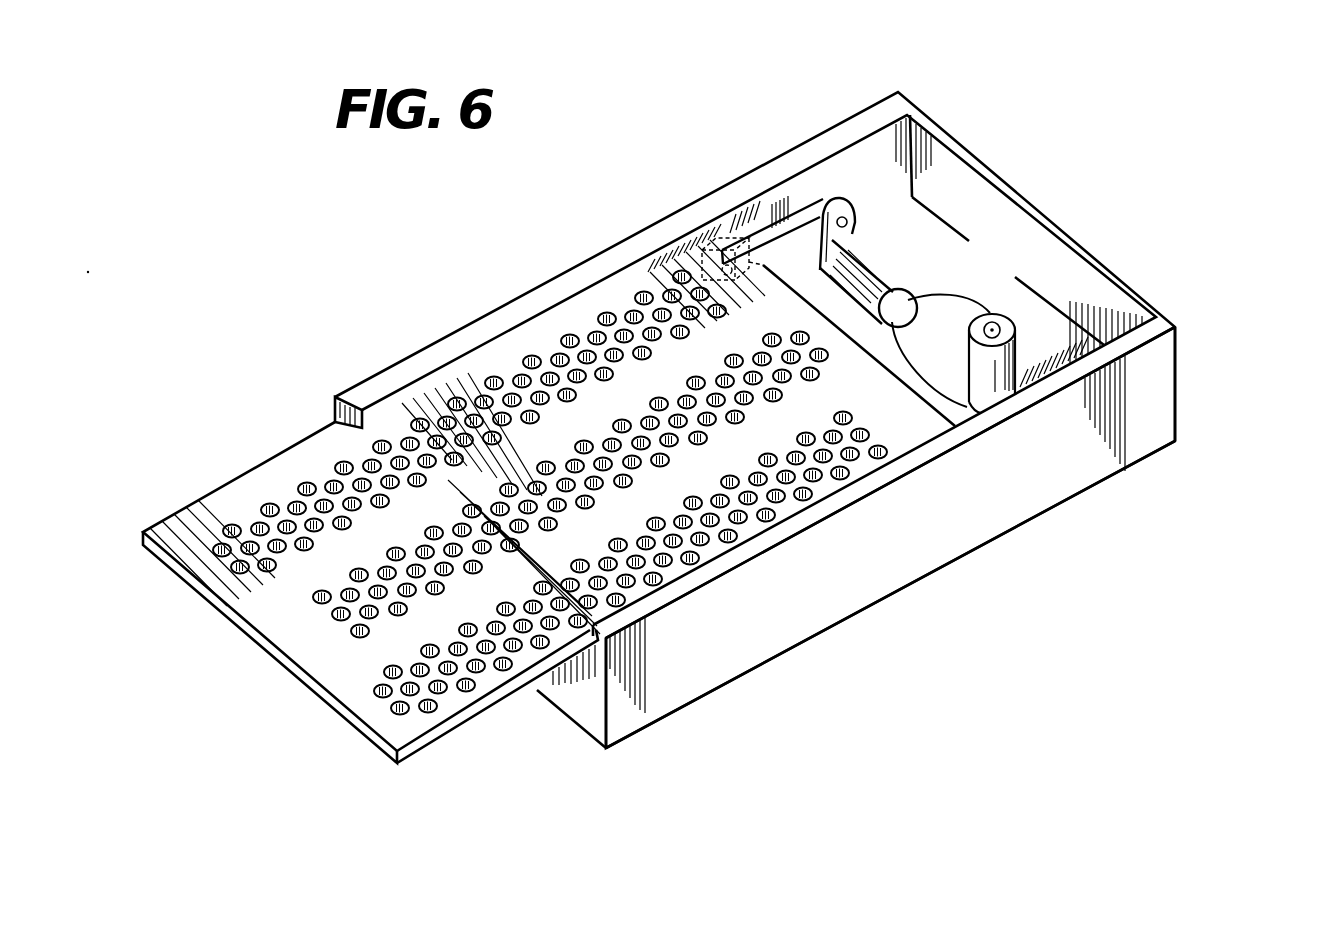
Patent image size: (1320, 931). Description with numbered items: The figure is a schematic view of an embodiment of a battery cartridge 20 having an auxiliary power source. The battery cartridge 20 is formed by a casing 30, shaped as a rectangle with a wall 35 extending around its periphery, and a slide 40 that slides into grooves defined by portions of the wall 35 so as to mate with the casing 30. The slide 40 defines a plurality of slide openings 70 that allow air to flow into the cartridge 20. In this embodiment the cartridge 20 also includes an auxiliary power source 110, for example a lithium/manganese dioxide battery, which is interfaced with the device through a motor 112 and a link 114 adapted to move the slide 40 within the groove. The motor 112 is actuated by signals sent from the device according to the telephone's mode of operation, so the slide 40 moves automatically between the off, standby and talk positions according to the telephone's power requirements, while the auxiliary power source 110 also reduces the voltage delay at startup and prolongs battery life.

The battery cartridge 20 is at (405, 290).
The casing 30 is at (1178, 389).
The wall 35 is at (743, 627).
The slide 40 is at (410, 730).
The slide openings 70 is at (300, 486).
The auxiliary power source 110 is at (1025, 340).
The motor 112 is at (877, 270).
The link 114 is at (778, 228).